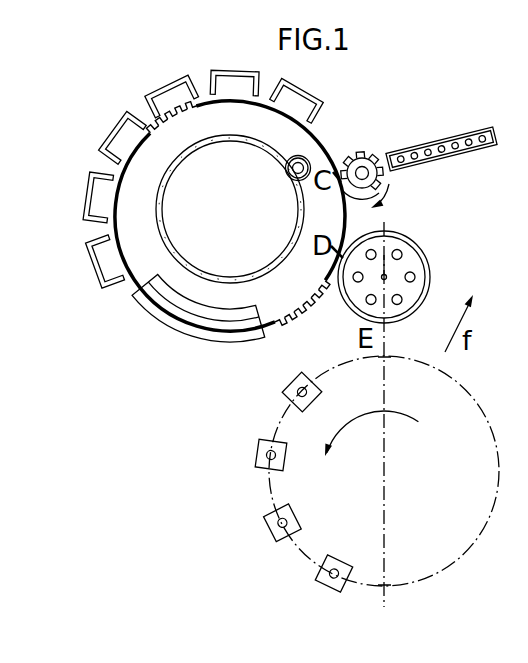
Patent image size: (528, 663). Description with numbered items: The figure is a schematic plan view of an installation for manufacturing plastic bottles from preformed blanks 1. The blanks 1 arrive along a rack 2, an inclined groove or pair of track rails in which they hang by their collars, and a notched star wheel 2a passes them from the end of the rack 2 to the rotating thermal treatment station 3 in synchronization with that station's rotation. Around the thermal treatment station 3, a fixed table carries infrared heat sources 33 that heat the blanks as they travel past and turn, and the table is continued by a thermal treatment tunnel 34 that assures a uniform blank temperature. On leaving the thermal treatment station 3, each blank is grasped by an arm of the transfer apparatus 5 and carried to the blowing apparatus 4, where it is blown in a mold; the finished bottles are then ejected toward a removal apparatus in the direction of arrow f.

The blanks 1 is at (456, 157).
The rack 2 is at (428, 146).
The star wheel 2a is at (367, 149).
The thermal treatment station 3 is at (106, 121).
The infrared heat sources 33 is at (312, 92).
The thermal treatment tunnel 34 is at (182, 322).
The blowing apparatus 4 is at (415, 500).
The transfer apparatus 5 is at (436, 270).